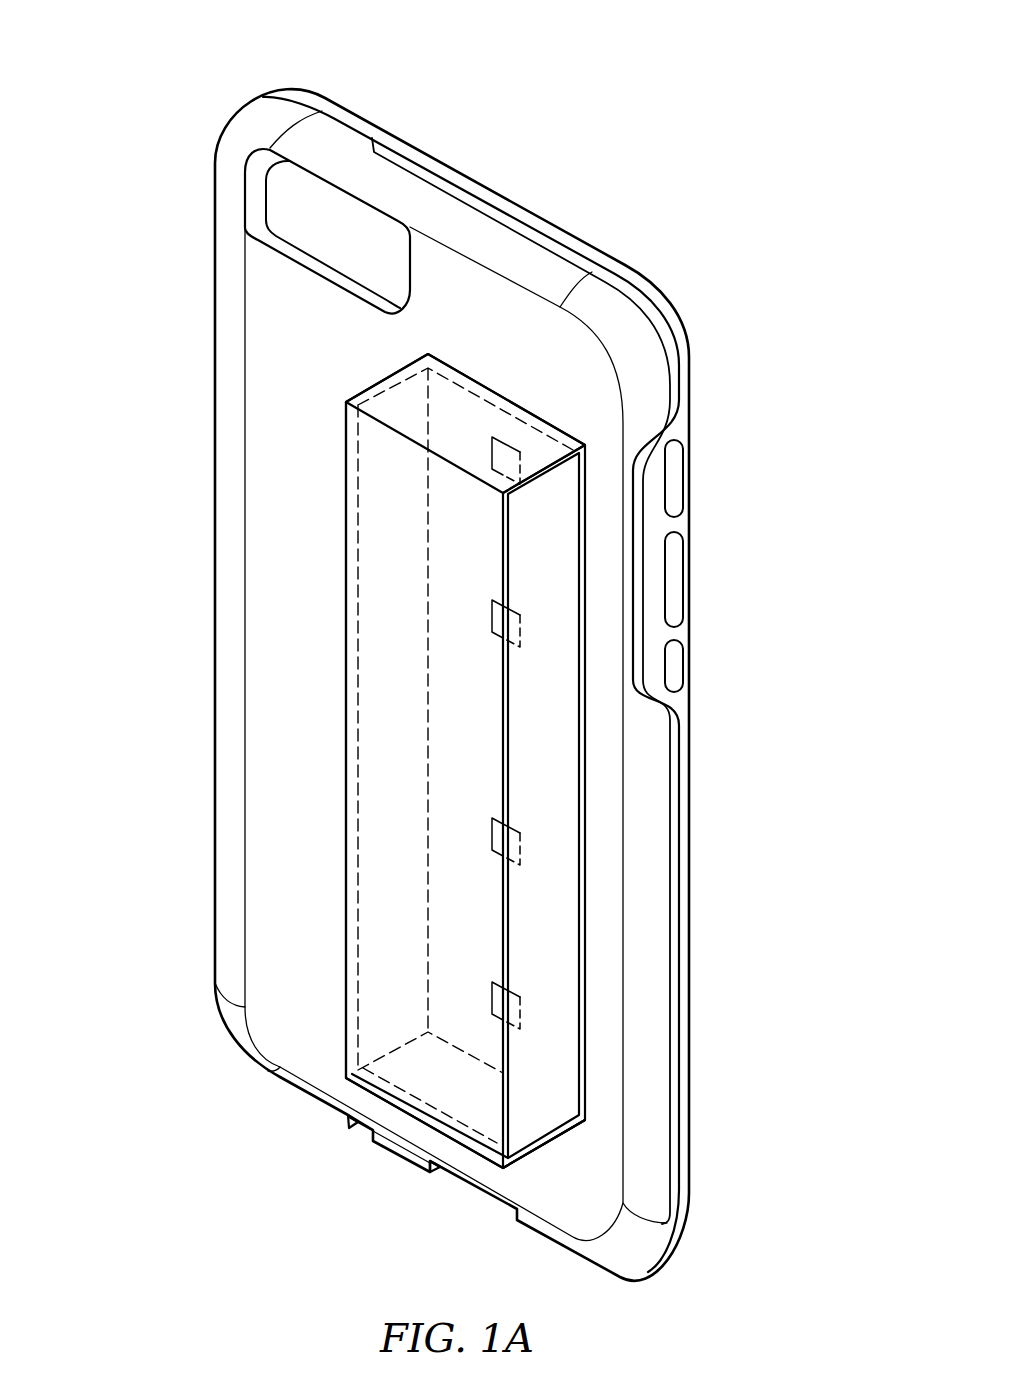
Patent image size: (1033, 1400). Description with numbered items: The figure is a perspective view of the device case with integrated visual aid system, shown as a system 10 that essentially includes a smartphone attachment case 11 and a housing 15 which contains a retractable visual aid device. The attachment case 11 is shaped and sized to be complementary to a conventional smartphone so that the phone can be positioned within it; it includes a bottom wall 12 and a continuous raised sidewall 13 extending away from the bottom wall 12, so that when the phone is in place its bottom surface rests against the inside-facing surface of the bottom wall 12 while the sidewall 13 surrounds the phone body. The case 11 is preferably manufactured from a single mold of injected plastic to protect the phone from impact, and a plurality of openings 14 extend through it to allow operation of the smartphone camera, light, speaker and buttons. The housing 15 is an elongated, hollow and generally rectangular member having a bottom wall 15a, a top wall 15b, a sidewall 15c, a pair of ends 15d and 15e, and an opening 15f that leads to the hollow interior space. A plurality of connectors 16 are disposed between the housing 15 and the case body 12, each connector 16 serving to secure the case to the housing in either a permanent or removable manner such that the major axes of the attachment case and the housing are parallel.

The system 10 is at (200, 93).
The smartphone attachment case 11 is at (207, 424).
The bottom wall 12 is at (298, 513).
The continuous raised sidewall 13 is at (580, 262).
The openings 14 is at (292, 195).
The housing 15 is at (332, 450).
The bottom wall 15a is at (558, 765).
The top wall 15b is at (482, 783).
The sidewall 15c is at (345, 650).
The end 15d is at (460, 418).
The end 15e is at (483, 1157).
The opening 15f is at (546, 941).
The connectors 16 is at (492, 615).